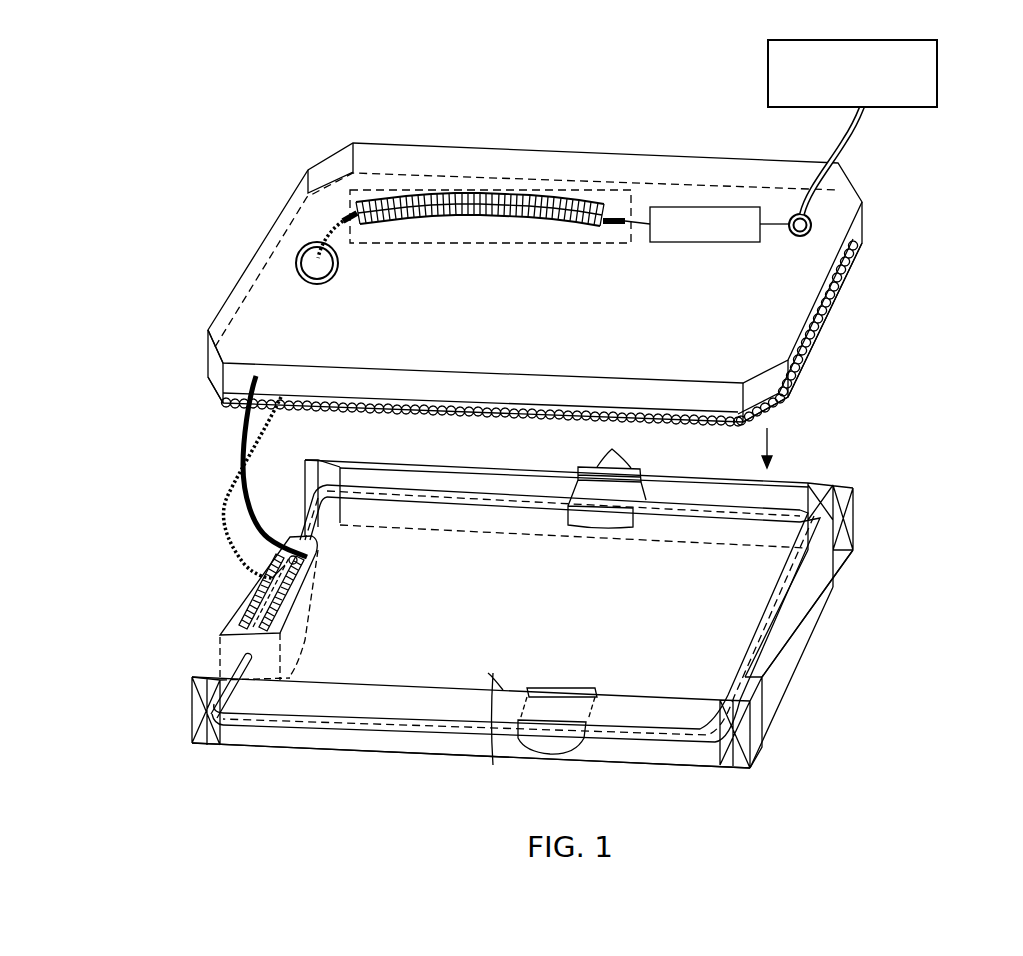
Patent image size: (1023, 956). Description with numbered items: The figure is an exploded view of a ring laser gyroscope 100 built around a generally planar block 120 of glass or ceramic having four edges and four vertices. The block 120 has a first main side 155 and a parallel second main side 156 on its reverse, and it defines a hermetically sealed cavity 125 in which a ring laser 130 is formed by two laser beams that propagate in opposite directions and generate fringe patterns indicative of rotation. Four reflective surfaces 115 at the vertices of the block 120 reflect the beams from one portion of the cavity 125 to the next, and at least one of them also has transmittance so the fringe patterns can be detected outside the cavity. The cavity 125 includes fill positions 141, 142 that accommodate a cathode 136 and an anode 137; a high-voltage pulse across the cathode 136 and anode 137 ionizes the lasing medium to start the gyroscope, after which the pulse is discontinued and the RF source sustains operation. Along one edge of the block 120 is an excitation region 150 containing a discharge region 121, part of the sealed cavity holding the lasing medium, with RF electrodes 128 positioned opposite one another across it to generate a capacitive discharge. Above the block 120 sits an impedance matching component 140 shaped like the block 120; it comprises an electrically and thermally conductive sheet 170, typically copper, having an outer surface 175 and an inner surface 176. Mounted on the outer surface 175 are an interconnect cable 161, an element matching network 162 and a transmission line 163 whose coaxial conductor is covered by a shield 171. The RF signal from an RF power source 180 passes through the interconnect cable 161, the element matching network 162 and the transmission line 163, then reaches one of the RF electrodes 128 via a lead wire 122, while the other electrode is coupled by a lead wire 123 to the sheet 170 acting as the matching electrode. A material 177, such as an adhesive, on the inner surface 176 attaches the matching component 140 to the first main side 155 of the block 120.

The ring laser gyroscope 100 is at (91, 248).
The reflective surfaces 115 is at (306, 459).
The block 120 is at (927, 480).
The discharge region 121 is at (267, 573).
The lead wire 122 is at (300, 248).
The lead wire 123 is at (243, 433).
The hermetically sealed cavity 125 is at (795, 613).
The RF electrodes 128 is at (243, 610).
The ring laser 130 is at (762, 653).
The cathode 136 is at (555, 755).
The anode 137 is at (610, 450).
The impedance matching component 140 is at (898, 160).
The fill position 141 is at (555, 702).
The fill position 142 is at (640, 490).
The excitation region 150 is at (228, 626).
The first main side 155 is at (493, 736).
The second main side 156 is at (327, 753).
The interconnect cable 161 is at (864, 132).
The element matching network 162 is at (673, 207).
The transmission line 163 is at (455, 196).
The electrically and thermally conductive sheet 170 is at (252, 311).
The shield 171 is at (541, 187).
The outer surface 175 is at (207, 342).
The inner surface 176 is at (209, 382).
The material 177 is at (805, 362).
The RF power source 180 is at (937, 73).